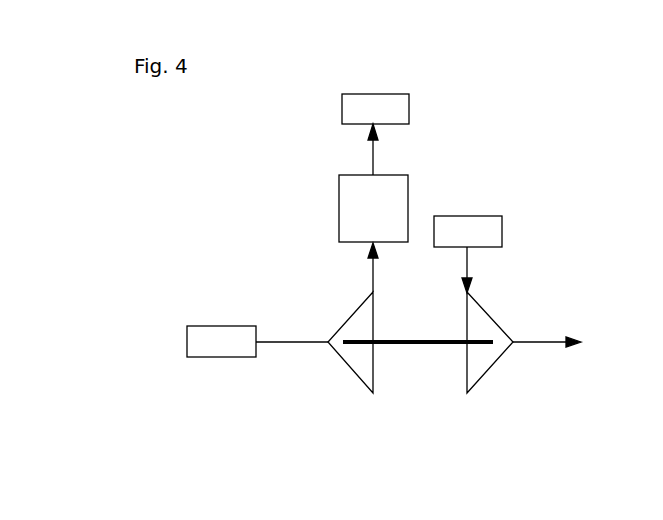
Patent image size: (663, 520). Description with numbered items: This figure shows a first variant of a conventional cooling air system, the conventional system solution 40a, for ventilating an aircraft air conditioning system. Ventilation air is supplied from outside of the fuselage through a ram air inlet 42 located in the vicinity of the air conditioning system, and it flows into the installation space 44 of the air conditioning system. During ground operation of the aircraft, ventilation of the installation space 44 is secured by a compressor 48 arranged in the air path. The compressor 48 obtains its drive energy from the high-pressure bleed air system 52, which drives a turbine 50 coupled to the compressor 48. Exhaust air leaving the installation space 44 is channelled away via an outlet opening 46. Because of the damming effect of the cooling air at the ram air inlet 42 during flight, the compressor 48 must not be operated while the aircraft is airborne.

The conventional system solution 40a is at (406, 420).
The ram air inlet 42 is at (208, 357).
The installation space 44 is at (339, 218).
The outlet opening 46 is at (409, 112).
The compressor 48 is at (352, 375).
The turbine 50 is at (480, 380).
The high-pressure bleed air system 52 is at (502, 230).